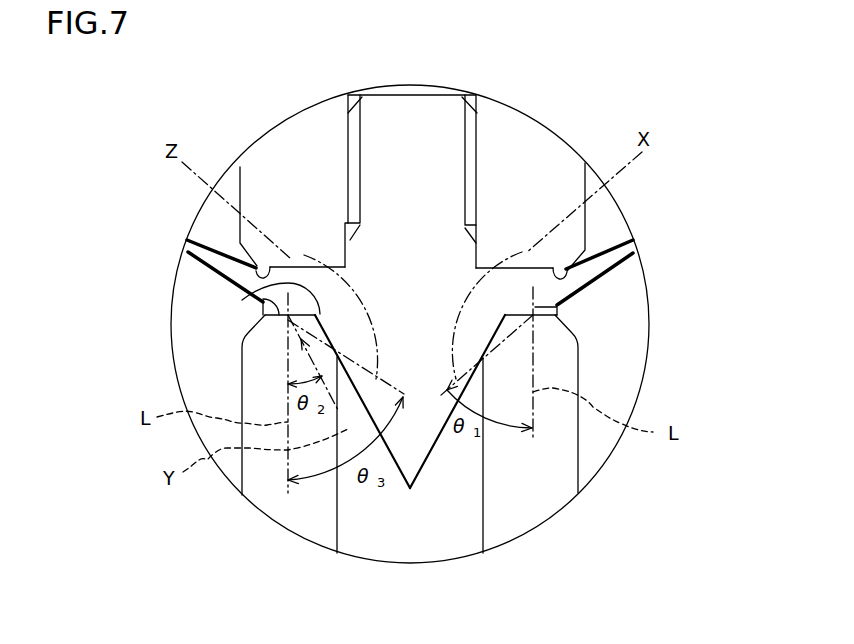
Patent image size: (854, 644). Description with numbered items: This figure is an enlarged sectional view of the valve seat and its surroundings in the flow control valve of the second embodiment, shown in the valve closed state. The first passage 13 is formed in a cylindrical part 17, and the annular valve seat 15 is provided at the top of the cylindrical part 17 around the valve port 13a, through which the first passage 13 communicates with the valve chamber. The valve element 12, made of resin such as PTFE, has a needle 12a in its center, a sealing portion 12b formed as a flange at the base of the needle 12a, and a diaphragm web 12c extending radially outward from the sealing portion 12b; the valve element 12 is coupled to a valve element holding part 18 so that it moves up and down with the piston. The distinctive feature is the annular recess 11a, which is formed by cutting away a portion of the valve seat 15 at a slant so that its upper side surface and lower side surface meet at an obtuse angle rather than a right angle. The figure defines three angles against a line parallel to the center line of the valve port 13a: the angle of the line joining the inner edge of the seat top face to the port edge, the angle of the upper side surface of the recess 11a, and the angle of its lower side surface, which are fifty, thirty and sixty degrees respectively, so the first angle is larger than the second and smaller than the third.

The annular recess 11a is at (242, 300).
The valve element 12 is at (420, 178).
The needle 12a is at (547, 522).
The sealing portion 12b is at (535, 318).
The diaphragm web 12c is at (602, 266).
The first passage 13 is at (452, 510).
The valve port 13a is at (338, 488).
The valve seat 15 is at (277, 298).
The cylindrical part 17 is at (268, 497).
The valve element holding part 18 is at (293, 148).